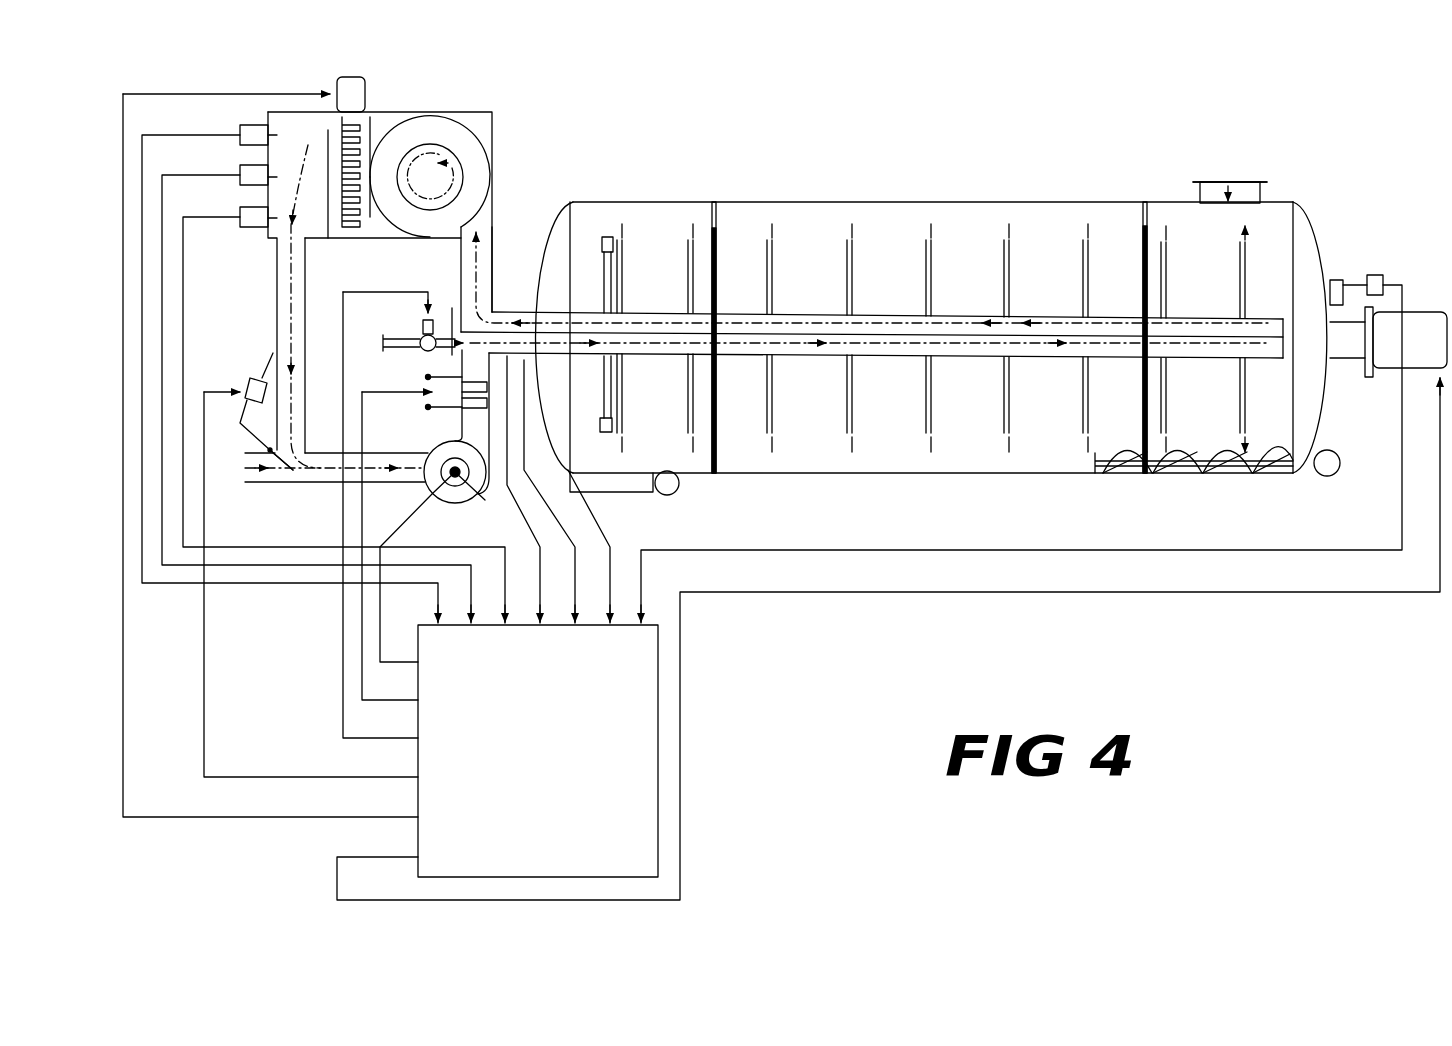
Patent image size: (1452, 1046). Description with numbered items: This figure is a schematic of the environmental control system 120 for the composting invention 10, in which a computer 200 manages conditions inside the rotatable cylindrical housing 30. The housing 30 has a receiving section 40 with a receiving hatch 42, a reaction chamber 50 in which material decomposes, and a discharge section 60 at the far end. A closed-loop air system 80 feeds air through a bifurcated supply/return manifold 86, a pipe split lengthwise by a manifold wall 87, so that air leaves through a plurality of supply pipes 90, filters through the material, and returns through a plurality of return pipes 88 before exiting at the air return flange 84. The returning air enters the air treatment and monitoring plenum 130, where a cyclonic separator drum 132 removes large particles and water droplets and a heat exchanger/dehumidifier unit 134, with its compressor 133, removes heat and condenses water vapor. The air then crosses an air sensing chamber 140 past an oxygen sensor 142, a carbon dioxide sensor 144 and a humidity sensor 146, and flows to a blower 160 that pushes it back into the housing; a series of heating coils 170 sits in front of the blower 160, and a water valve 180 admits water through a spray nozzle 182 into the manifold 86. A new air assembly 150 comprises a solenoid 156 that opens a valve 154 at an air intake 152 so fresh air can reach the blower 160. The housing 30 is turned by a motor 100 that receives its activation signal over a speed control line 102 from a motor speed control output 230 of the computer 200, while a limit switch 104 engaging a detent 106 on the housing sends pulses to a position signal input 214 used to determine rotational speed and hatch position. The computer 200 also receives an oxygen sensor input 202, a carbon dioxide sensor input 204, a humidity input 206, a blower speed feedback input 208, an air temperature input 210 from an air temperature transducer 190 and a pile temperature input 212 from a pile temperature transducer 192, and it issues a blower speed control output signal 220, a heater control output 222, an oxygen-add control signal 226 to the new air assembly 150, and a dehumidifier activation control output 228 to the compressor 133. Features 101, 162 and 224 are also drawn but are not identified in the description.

The invention 10 is at (812, 116).
The housing 30 is at (1105, 200).
The receiving section 40 is at (1232, 200).
The receiving hatch 42 is at (1213, 182).
The reaction chamber 50 is at (908, 218).
The discharge section 60 is at (655, 218).
The air system 80 is at (1180, 320).
The air return flange 84 is at (835, 327).
The supply/return manifold 86 is at (860, 350).
The manifold wall 87 is at (1185, 350).
The return pipes 88 is at (926, 270).
The supply pipes 90 is at (845, 391).
The motor 100 is at (1413, 322).
The screw conveyor 101 is at (1217, 461).
The speed control line 102 is at (1235, 592).
The limit switch 104 is at (1383, 282).
The detent 106 is at (1337, 280).
The environmental control system 120 is at (411, 88).
The air treatment and monitoring plenum 130 is at (421, 105).
The cyclonic separator drum 132 is at (491, 113).
The heat exchanger/dehumidifier compressor 133 is at (348, 82).
The heat exchanger/dehumidifier unit 134 is at (360, 140).
The air sensing chamber 140 is at (295, 122).
The O2 sensor 142 is at (240, 130).
The CO2 sensor 144 is at (240, 172).
The humidity sensor 146 is at (240, 215).
The new air assembly 150 is at (272, 497).
The air intake 152 is at (230, 478).
The valve 154 is at (283, 483).
The solenoid 156 is at (250, 381).
The blower 160 is at (430, 449).
The pump motor 162 is at (445, 502).
The heating coils 170 is at (426, 377).
The water valve 180 is at (440, 300).
The spray nozzle 182 is at (455, 290).
The air temperature transducer 190 is at (608, 237).
The pile temperature transducer 192 is at (612, 432).
The computer 200 is at (550, 850).
The O2 sensor input 202 is at (438, 627).
The CO2 sensor input 204 is at (471, 627).
The humidity input 206 is at (505, 627).
The blower speed feedback input 208 is at (540, 627).
The air temperature input 210 is at (575, 627).
The pile temperature input 212 is at (610, 627).
The position signal input 214 is at (641, 627).
The blower speed control output signal 220 is at (397, 662).
The heater control output 222 is at (412, 700).
The controller output 224 is at (412, 738).
The O2-add control signal 226 is at (412, 777).
The dehumidifier activation control output 228 is at (412, 817).
The motor speed control output 230 is at (408, 857).